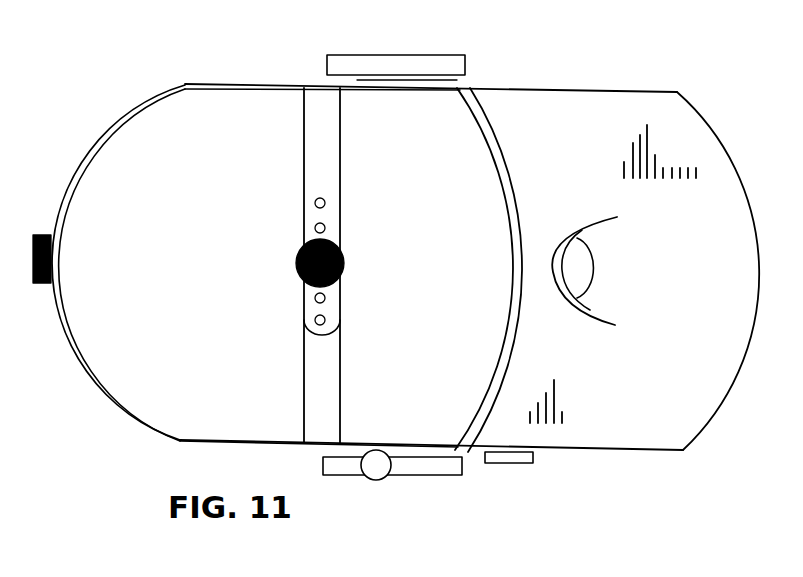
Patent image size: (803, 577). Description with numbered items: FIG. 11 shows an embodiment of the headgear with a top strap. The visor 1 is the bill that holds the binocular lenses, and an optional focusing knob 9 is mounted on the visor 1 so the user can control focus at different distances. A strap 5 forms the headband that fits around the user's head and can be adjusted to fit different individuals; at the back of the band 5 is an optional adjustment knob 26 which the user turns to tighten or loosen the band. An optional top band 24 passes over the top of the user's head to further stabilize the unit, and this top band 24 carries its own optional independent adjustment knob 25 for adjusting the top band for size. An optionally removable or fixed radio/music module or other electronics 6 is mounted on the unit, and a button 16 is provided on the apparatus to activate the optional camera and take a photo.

The visor 1 is at (602, 410).
The strap 5 is at (77, 343).
The electronics module 6 is at (445, 485).
The focusing knob 9 is at (602, 262).
The button 16 is at (512, 470).
The top band 24 is at (298, 166).
The adjustment knob 25 is at (290, 264).
The adjustment knob 26 is at (45, 228).